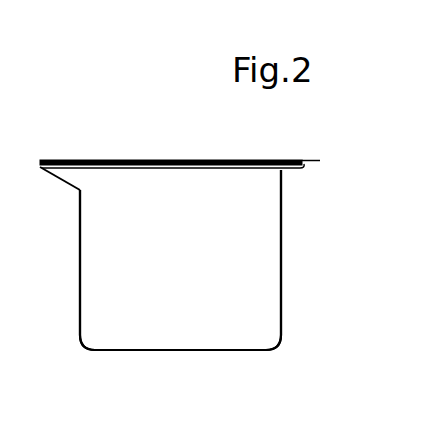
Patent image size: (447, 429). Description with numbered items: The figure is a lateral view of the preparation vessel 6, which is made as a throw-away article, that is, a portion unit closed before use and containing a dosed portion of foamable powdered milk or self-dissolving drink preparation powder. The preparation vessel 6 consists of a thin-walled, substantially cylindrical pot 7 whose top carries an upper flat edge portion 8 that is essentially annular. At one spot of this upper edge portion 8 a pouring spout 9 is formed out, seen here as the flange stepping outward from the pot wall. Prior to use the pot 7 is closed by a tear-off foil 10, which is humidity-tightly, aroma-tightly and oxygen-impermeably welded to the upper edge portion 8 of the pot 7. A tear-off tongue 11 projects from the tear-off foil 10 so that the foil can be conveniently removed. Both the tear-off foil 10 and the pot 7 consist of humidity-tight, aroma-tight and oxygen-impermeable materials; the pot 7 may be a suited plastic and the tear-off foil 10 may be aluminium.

The preparation vessel 6 is at (71, 284).
The pot 7 is at (204, 244).
The upper annular edge portion 8 is at (284, 171).
The pouring spout 9 is at (73, 174).
The tear-off foil 10 is at (172, 160).
The tear-off tongue 11 is at (320, 160).